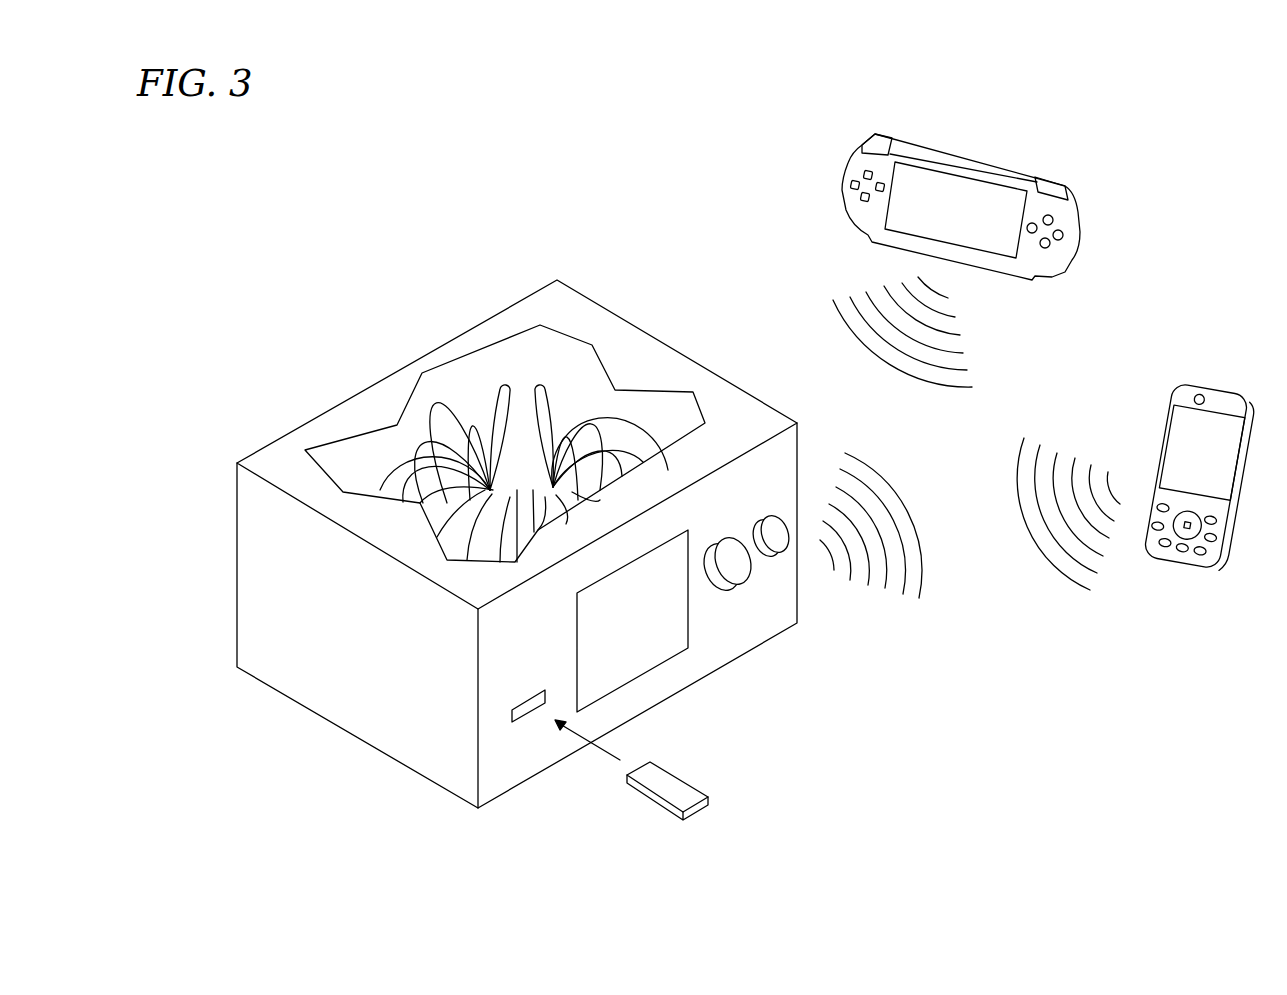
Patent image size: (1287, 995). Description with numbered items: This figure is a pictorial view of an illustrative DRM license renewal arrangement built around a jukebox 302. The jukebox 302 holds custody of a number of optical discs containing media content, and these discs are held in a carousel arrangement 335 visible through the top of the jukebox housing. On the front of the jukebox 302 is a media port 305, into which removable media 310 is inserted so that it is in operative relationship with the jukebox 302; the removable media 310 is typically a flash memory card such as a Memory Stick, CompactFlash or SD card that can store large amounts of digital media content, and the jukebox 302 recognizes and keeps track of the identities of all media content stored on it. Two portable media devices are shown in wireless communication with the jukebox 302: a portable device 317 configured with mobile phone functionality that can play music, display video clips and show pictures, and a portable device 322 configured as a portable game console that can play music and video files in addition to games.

The jukebox 302 is at (528, 785).
The media port 305 is at (541, 690).
The removable media 310 is at (650, 800).
The portable device 317 is at (1228, 385).
The portable device 322 is at (1012, 163).
The carousel arrangement 335 is at (573, 376).